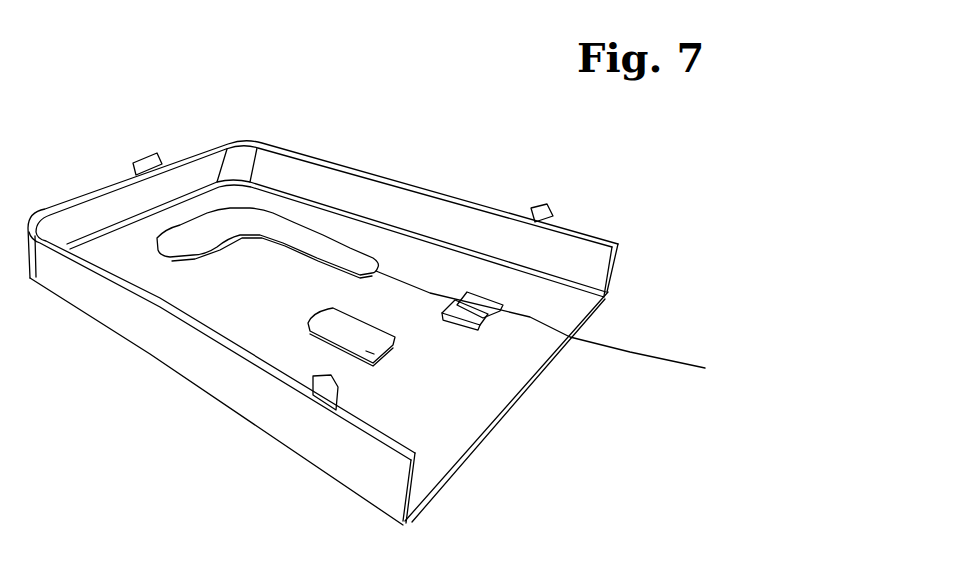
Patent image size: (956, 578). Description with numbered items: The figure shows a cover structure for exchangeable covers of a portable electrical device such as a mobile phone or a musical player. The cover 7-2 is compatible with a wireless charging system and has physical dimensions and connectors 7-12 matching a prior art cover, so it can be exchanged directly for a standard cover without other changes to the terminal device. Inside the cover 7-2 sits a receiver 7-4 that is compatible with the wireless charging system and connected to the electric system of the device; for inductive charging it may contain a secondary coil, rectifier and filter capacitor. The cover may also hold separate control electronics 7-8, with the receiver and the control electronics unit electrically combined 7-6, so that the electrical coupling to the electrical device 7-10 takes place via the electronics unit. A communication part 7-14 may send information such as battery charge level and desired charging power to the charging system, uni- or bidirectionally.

The cover 7-2 is at (180, 362).
The receiver 7-4 is at (295, 236).
The electrical combination of receiver and control electronics 7-6 is at (368, 323).
The control electronics 7-8 is at (576, 330).
The electrical coupling to the electrical device 7-10 is at (462, 318).
The connectors 7-12 is at (133, 161).
The communication part 7-14 is at (370, 351).